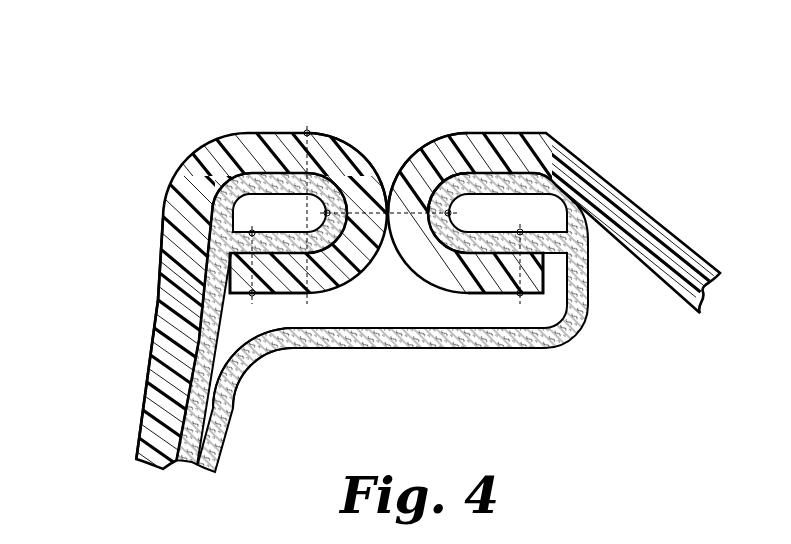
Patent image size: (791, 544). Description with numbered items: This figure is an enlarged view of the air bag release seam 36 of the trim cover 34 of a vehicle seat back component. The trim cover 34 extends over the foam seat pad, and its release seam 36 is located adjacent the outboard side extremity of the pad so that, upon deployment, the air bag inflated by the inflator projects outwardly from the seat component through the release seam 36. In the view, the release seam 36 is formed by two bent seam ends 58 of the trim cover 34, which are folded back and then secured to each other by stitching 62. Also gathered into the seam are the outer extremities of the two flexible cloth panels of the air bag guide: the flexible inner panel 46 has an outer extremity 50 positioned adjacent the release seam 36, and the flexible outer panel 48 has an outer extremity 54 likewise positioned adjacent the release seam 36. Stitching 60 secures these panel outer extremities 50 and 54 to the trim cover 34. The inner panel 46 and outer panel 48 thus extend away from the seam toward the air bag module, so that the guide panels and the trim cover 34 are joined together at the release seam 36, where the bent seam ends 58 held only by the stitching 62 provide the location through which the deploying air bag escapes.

The trim cover 34 is at (591, 160).
The air bag release seam 36 is at (321, 246).
The inner panel 46 is at (246, 393).
The outer panel 48 is at (180, 395).
The outer extremity of the inner panel 50 is at (473, 349).
The outer extremity of the outer panel 54 is at (200, 300).
The bent seam ends 58 is at (363, 139).
The stitching 60 is at (520, 267).
The stitching 62 is at (455, 141).